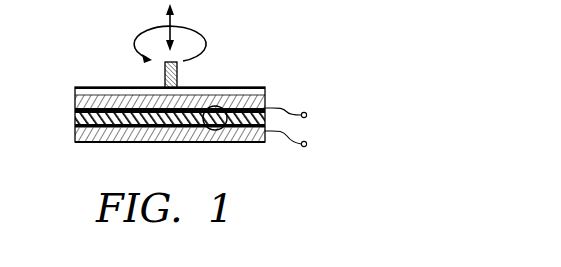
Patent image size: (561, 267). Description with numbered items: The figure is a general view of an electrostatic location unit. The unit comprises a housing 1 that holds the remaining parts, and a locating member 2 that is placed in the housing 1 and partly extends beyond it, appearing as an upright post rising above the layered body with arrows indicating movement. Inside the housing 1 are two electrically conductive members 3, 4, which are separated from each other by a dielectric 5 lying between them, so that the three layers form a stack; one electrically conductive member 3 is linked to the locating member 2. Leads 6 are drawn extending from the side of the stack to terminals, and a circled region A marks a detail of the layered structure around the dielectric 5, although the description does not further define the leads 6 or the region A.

The housing 1 is at (93, 86).
The locating member 2 is at (183, 77).
The electrically conductive member 3 is at (74, 98).
The electrically conductive member 4 is at (74, 137).
The dielectric 5 is at (74, 118).
The electrical leads / terminals 6 is at (295, 126).
The detail region A is at (223, 88).